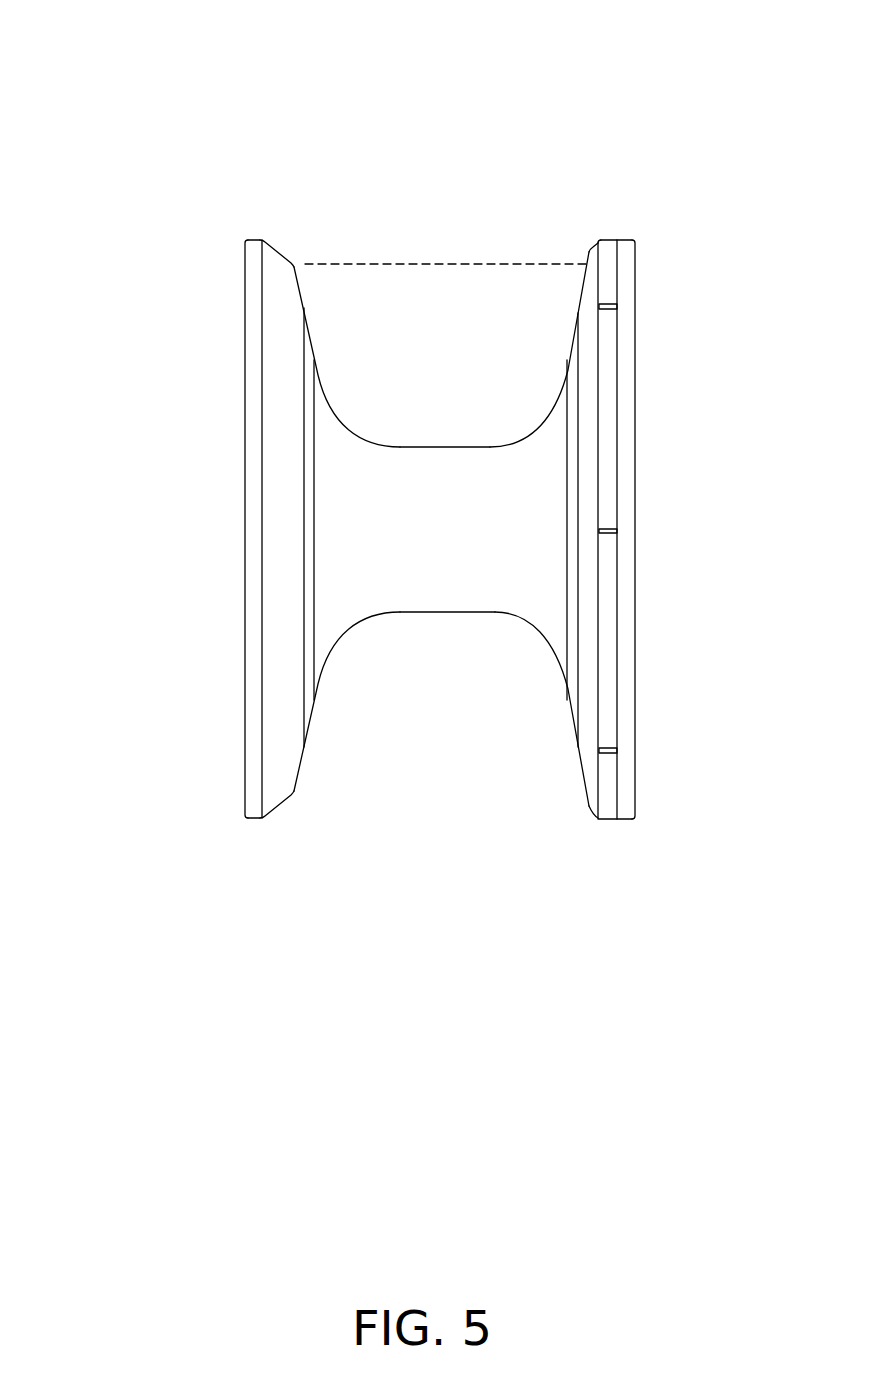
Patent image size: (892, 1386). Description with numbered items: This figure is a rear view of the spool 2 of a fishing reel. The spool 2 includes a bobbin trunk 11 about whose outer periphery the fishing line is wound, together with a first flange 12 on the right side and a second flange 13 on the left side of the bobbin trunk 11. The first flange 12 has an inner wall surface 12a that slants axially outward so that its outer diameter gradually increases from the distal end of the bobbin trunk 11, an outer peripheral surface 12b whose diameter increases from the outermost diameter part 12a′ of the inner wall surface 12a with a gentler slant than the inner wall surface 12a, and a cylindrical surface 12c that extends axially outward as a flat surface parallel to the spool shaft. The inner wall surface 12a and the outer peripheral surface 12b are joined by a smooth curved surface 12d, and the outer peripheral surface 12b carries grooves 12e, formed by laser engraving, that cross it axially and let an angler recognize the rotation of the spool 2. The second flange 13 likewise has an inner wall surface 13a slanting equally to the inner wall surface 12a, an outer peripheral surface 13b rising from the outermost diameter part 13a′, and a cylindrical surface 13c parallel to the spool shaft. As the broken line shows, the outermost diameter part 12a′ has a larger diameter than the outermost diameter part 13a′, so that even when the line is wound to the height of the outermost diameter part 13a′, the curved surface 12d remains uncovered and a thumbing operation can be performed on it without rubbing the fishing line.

The spool 2 is at (231, 192).
The bobbin trunk 11 is at (441, 613).
The first flange 12 is at (565, 841).
The inner wall surface 12a is at (555, 383).
The outermost diameter part 12a′ is at (591, 250).
The outer peripheral surface 12b is at (607, 240).
The cylindrical surface 12c is at (627, 240).
The curved surface 12d is at (593, 242).
The groove 12e is at (603, 309).
The second flange 13 is at (302, 832).
The inner wall surface 13a is at (323, 383).
The outermost diameter part 13a′ is at (295, 265).
The outer peripheral surface 13b is at (277, 242).
The cylindrical surface 13c is at (257, 240).